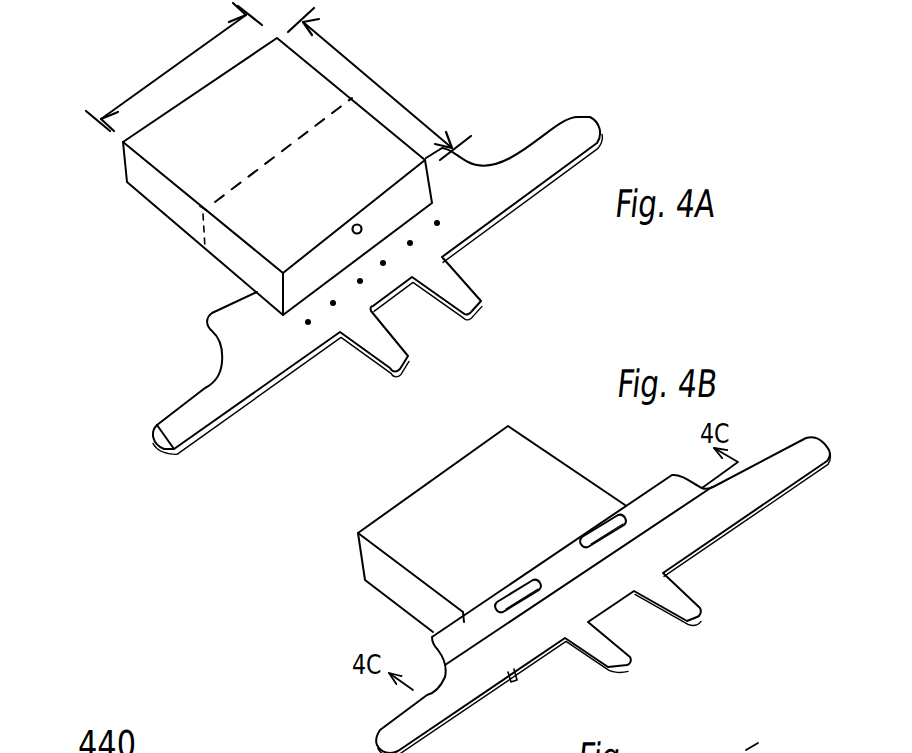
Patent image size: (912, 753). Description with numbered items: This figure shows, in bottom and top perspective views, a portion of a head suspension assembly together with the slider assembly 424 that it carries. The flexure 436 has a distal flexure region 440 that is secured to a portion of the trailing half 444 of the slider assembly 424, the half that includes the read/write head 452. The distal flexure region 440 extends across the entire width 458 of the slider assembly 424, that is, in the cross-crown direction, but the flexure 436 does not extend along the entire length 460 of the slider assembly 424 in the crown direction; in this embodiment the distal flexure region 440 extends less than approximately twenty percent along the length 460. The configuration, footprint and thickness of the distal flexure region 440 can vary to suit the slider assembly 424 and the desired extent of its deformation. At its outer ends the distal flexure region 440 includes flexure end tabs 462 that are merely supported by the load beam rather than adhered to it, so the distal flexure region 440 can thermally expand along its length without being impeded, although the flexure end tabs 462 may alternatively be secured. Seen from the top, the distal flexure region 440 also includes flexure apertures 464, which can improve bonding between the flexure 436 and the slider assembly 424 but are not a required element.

In FIG. 4A, the slider assembly 424 is at (196, 216).
In FIG. 4B, the slider assembly 424 is at (413, 537).
In FIG. 4A, the flexure 436 is at (610, 117).
In FIG. 4A, the distal flexure region 440 is at (247, 335).
In FIG. 4B, the distal flexure region 440 is at (624, 588).
In FIG. 4A, the trailing half 444 is at (276, 220).
In FIG. 4A, the read/write head 452 is at (351, 233).
In FIG. 4A, the width 458 is at (174, 67).
In FIG. 4A, the length 460 is at (379, 84).
In FIG. 4A, the flexure end tabs 462 is at (167, 434).
In FIG. 4B, the flexure apertures 464 is at (522, 600).